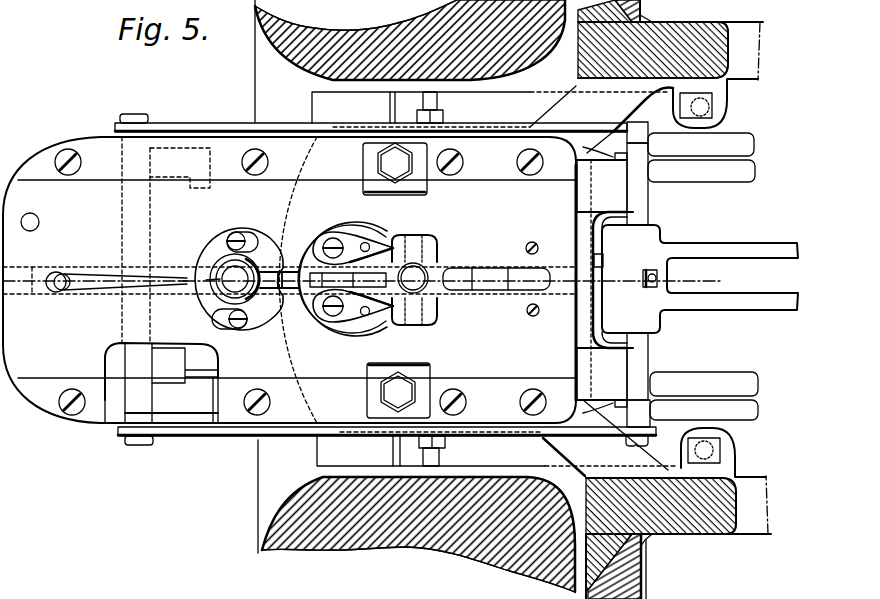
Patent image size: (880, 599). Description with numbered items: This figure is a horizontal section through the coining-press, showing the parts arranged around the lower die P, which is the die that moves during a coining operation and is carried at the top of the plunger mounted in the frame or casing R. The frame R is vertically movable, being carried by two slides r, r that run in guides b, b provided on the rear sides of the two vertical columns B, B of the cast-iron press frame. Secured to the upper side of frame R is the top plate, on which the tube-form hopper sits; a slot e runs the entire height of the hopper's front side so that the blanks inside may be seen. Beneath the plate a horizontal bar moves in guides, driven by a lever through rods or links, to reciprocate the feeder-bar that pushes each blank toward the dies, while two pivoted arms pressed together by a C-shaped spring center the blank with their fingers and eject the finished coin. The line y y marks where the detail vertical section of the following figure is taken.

The vertical posts or columns B is at (360, 33).
The slot or slit e is at (200, 280).
The section line y y is at (361, 281).
The lower die P is at (424, 284).
The frame or casing R is at (714, 540).
The slides r is at (648, 17).
The guides b is at (652, 572).